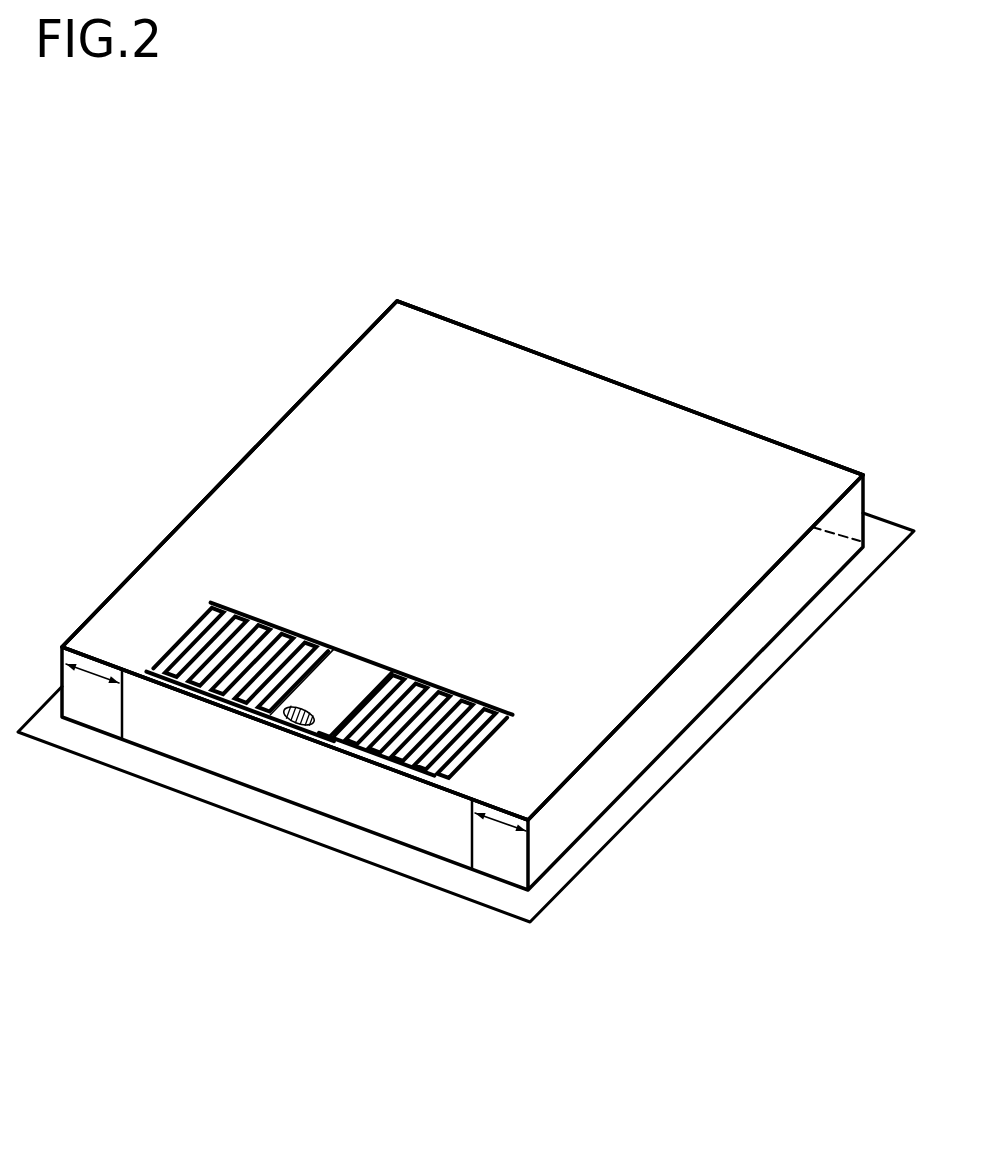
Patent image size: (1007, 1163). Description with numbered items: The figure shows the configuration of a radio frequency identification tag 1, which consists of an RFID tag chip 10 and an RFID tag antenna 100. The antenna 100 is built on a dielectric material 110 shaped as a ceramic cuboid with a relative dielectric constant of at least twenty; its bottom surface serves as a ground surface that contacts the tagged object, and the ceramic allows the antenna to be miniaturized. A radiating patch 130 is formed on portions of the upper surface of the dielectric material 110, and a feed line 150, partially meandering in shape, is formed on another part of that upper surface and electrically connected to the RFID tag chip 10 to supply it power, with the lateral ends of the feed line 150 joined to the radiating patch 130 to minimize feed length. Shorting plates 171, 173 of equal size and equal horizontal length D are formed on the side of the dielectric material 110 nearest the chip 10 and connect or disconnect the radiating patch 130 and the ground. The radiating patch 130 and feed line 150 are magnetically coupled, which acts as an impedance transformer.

The RFID tag 1 is at (631, 358).
The RFID tag antenna 100 is at (505, 340).
The dielectric material 110 is at (720, 678).
The radiating patch 130 is at (440, 517).
The feed line 150 is at (390, 770).
The RFID tag chip 10 is at (277, 727).
The shorting plate 171 is at (97, 735).
The shorting plate 173 is at (462, 841).